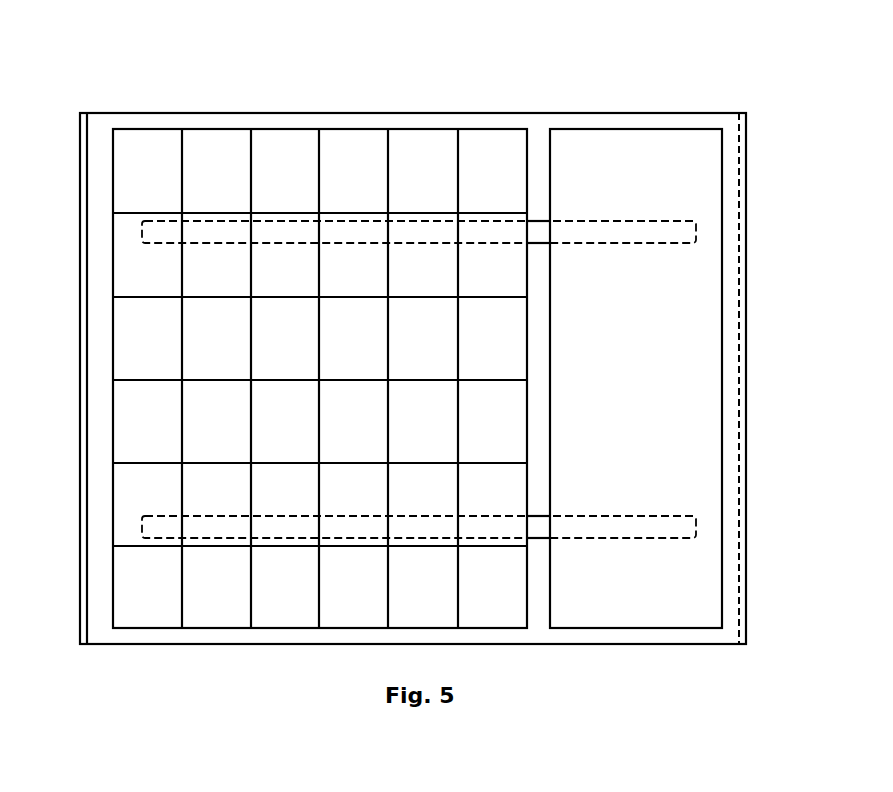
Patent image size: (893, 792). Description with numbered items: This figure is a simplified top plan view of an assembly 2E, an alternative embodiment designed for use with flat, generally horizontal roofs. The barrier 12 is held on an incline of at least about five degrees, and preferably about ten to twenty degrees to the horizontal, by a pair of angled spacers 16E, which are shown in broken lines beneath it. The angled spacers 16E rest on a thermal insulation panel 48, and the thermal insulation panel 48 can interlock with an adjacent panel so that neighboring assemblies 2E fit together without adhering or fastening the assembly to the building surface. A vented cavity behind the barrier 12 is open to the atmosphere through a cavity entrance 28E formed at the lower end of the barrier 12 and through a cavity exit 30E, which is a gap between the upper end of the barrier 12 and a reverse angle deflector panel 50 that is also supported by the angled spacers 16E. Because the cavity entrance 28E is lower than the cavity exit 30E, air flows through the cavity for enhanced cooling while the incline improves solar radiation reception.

The assembly 2E is at (693, 82).
The barrier 12 is at (286, 158).
The cavity entrance 28E is at (81, 447).
The cavity exit 30E is at (538, 375).
The reverse angle deflector panel 50 is at (703, 443).
The angled spacers 16E is at (607, 538).
The thermal insulation panel 48 is at (534, 617).